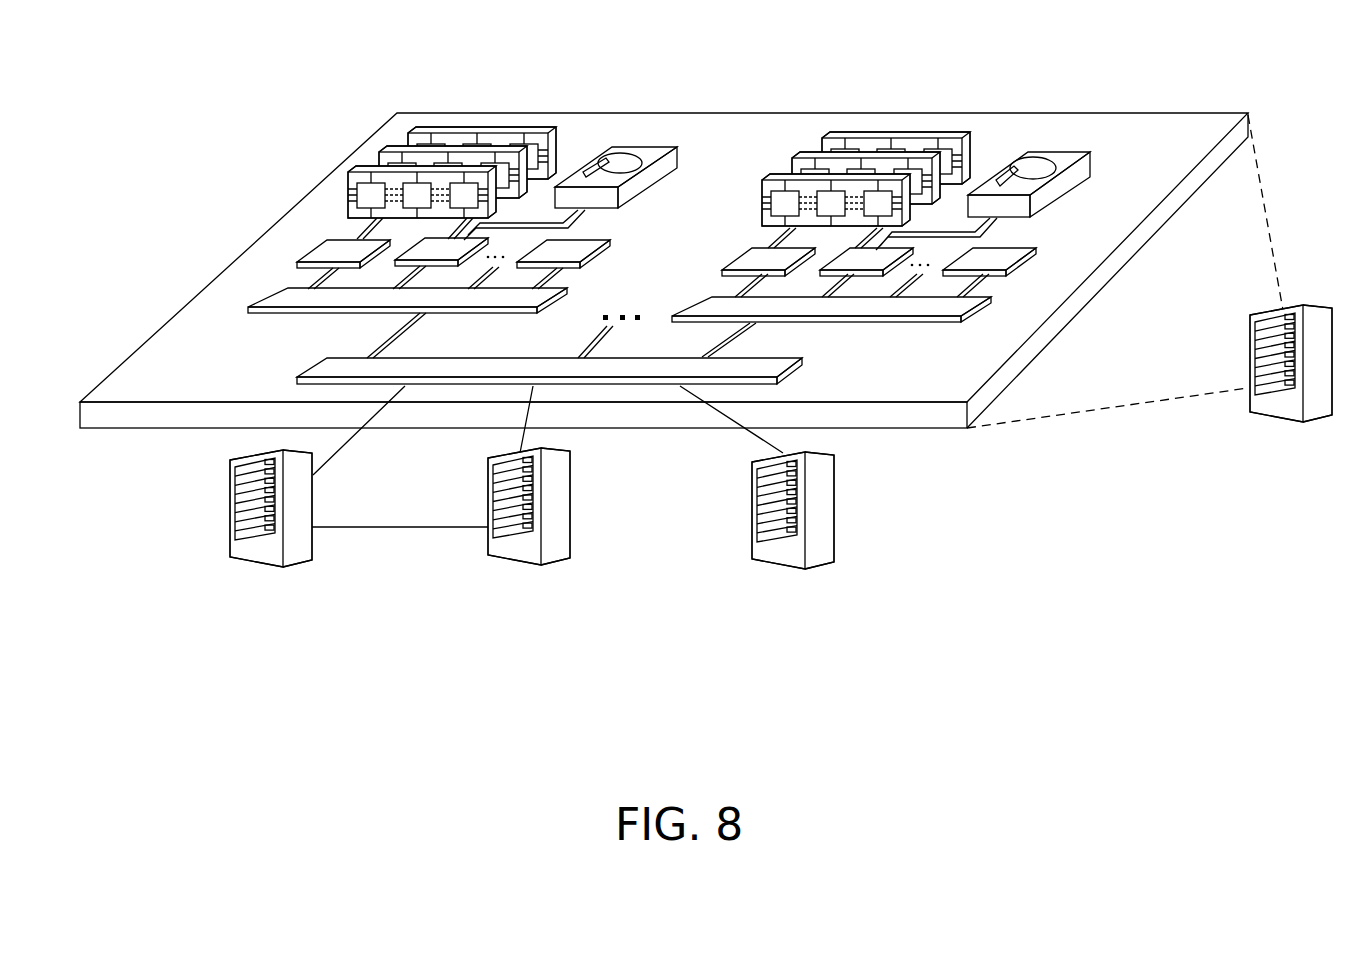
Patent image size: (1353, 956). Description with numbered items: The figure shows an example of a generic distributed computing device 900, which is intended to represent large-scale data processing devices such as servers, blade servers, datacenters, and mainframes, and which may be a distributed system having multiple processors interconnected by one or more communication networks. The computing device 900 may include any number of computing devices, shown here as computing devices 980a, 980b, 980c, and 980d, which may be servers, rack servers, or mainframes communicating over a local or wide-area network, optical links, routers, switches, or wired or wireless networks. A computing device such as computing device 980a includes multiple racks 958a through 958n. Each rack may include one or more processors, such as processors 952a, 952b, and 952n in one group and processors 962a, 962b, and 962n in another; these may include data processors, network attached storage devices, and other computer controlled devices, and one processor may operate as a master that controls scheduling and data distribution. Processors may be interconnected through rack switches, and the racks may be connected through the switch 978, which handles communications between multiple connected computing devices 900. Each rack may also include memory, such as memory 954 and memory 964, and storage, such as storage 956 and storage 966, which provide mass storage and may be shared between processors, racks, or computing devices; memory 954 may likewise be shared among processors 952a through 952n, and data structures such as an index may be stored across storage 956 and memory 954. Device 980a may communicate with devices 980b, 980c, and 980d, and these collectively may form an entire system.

The computing device 900 is at (243, 133).
The memory 954 is at (485, 130).
The storage 956 is at (642, 145).
The memory 964 is at (902, 137).
The storage 966 is at (1053, 152).
The processor 952a is at (338, 247).
The processor 952b is at (428, 248).
The processor 952n is at (577, 250).
The processor 962a is at (765, 256).
The processor 962b is at (858, 262).
The processor 962n is at (990, 258).
The rack 958a is at (285, 298).
The rack 958n is at (943, 307).
The switch 978 is at (327, 370).
The computing device 980a is at (1250, 335).
The computing device 980b is at (230, 508).
The computing device 980c is at (488, 500).
The computing device 980d is at (752, 510).